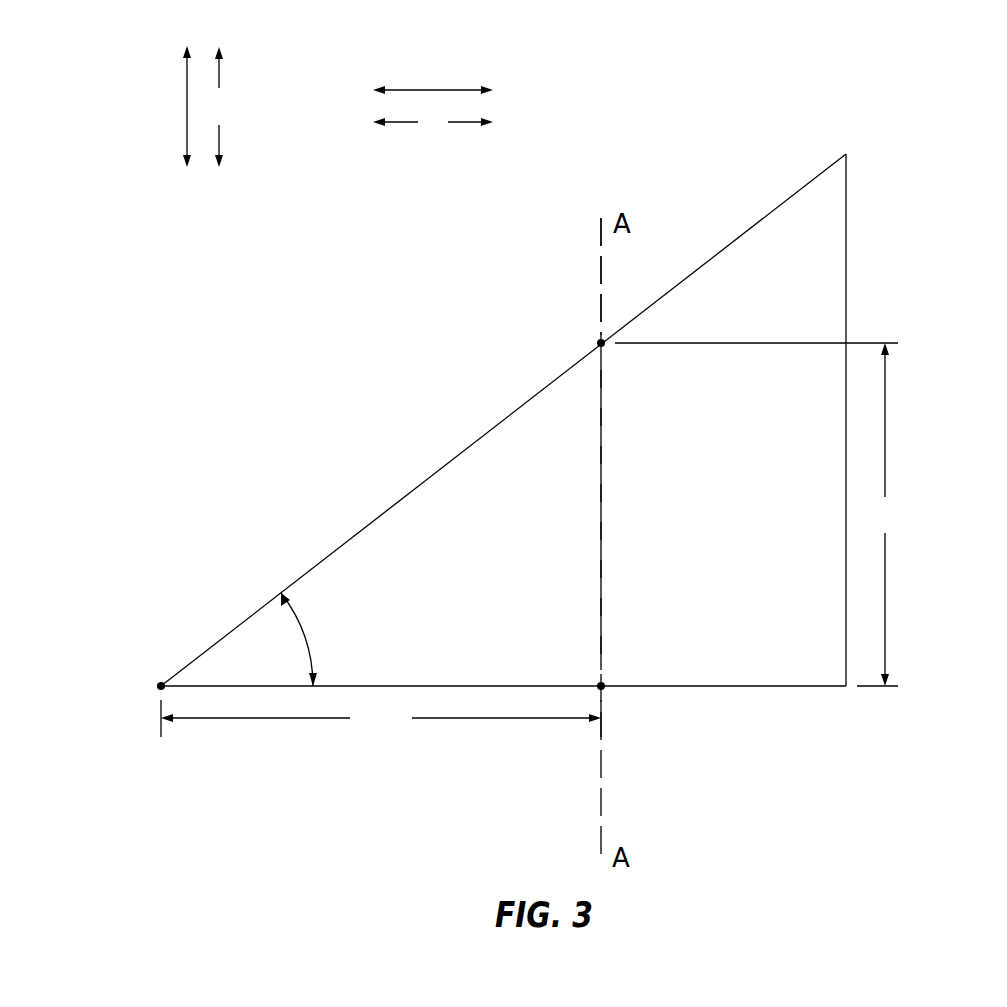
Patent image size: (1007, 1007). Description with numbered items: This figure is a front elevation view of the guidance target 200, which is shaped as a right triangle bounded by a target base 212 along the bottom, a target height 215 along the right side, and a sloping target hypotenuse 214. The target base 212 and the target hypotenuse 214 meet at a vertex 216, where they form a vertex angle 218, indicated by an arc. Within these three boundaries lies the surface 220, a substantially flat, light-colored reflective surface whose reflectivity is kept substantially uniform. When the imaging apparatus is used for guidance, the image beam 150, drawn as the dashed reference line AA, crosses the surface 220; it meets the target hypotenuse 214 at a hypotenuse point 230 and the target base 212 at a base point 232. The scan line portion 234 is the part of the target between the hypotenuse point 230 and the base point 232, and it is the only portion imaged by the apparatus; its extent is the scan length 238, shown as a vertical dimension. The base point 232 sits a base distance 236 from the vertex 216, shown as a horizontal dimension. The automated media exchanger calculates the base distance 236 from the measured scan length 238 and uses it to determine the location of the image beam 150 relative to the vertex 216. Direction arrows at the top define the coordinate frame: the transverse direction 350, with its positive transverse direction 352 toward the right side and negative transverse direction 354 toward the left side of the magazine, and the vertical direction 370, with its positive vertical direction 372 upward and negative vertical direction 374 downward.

The image beam 150 is at (599, 288).
The guidance target 200 is at (288, 345).
The target base 212 is at (715, 687).
The target hypotenuse 214 is at (398, 500).
The target height 215 is at (848, 262).
The vertex 216 is at (150, 684).
The vertex angle 218 is at (308, 635).
The surface 220 is at (515, 548).
The hypotenuse point 230 is at (616, 355).
The base point 232 is at (609, 673).
The scan line portion 234 is at (603, 508).
The base distance 236 is at (381, 718).
The scan length 238 is at (881, 514).
The transverse direction 350 is at (433, 90).
The positive transverse direction 352 is at (460, 124).
The negative transverse direction 354 is at (405, 124).
The vertical direction 370 is at (186, 108).
The positive vertical direction 372 is at (220, 80).
The negative vertical direction 374 is at (220, 133).